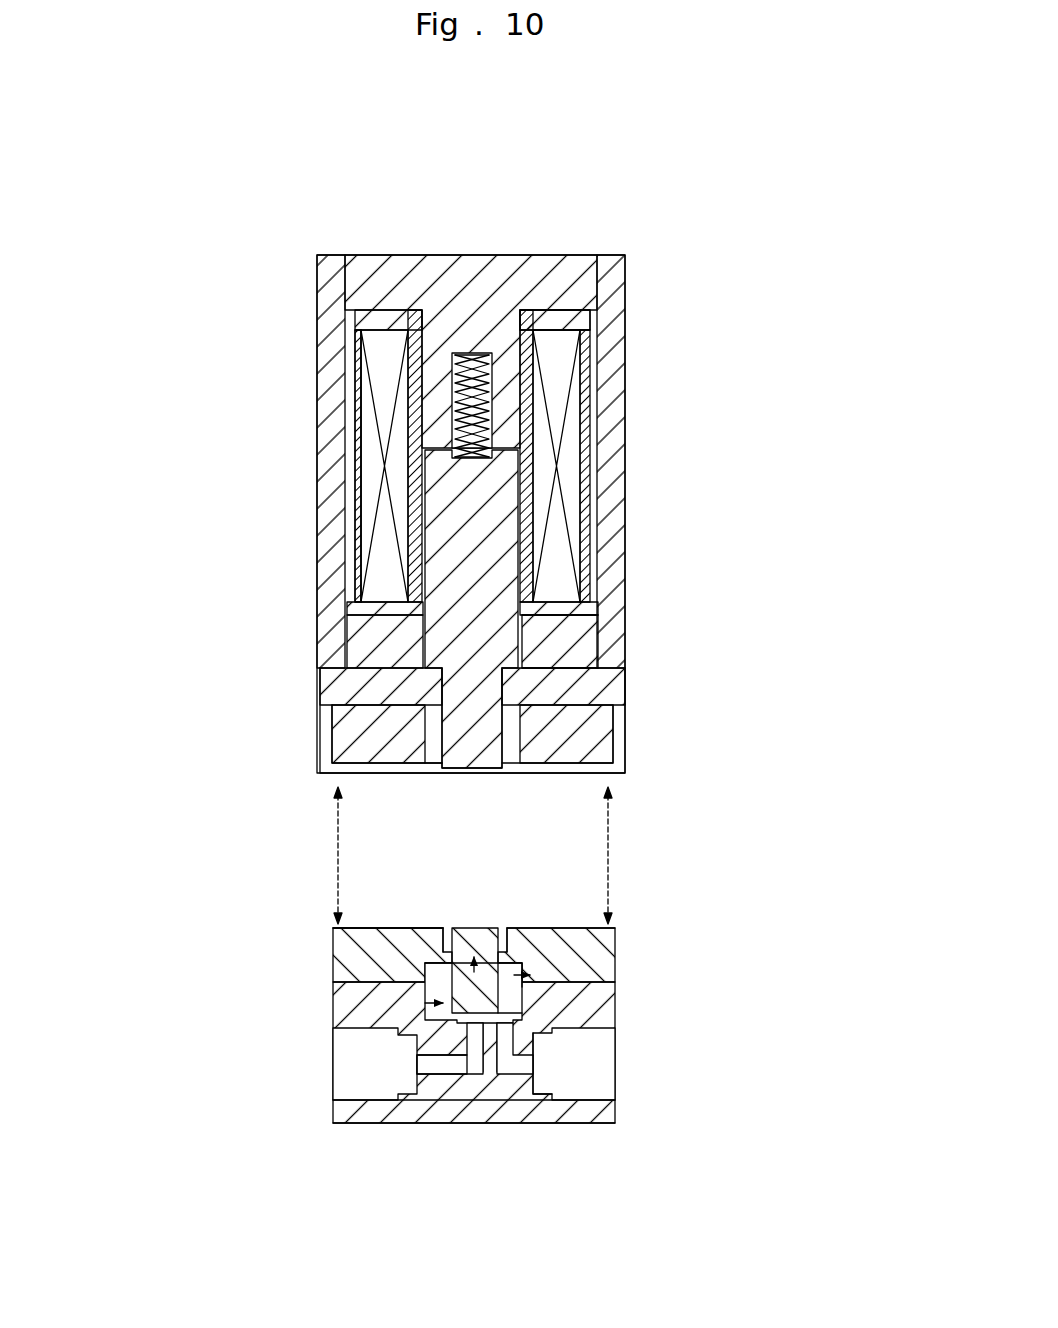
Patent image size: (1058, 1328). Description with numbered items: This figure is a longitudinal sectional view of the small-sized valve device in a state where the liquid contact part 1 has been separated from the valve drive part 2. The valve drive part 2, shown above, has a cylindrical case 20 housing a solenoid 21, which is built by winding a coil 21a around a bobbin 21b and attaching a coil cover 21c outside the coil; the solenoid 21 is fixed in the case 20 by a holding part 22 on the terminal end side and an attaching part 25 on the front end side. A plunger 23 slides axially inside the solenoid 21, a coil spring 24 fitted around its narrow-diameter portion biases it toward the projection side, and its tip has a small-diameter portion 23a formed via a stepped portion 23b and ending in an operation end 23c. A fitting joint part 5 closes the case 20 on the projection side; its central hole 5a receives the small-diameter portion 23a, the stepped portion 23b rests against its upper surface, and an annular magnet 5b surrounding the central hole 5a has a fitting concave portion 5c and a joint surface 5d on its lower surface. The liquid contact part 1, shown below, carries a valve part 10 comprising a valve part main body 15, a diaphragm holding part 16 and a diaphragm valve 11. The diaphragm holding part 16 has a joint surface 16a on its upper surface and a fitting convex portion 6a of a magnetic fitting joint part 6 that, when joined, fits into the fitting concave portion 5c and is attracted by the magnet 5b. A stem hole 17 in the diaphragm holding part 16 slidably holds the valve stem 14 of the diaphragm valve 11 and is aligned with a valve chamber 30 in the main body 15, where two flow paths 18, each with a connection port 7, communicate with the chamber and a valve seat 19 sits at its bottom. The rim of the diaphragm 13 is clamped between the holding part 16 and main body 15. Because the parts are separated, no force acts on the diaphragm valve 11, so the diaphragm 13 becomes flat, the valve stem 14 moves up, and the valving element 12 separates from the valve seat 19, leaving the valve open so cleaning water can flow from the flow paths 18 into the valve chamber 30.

The liquid contact part 1 is at (248, 967).
The valve drive part 2 is at (315, 525).
The fitting joint part 5 is at (630, 755).
The central hole 5a is at (410, 690).
The annular magnet 5b is at (620, 733).
The fitting concave portion 5c is at (342, 753).
The joint surface 5d is at (432, 765).
The fitting joint part 6 is at (326, 975).
The fitting convex portion 6a is at (332, 928).
The connection port 7 is at (357, 1087).
The valve part 10 is at (443, 1003).
The diaphragm valve 11 is at (443, 975).
The valving element 12 is at (470, 1040).
The diaphragm 13 is at (528, 1000).
The valve stem 14 is at (507, 944).
The valve part main body 15 is at (405, 1020).
The diaphragm holding part 16 is at (346, 945).
The joint surface 16a is at (408, 938).
The stem hole 17 is at (500, 938).
The flow path 18 is at (522, 1066).
The valve seat 19 is at (556, 1070).
The case 20 is at (334, 455).
The solenoid 21 is at (585, 400).
The coil 21a is at (566, 443).
The bobbin 21b is at (590, 318).
The coil cover 21c is at (352, 385).
The holding part 22 is at (470, 268).
The plunger 23 is at (500, 565).
The small-diameter portion 23a is at (600, 668).
The stepped portion 23b is at (600, 620).
The operation end 23c is at (497, 695).
The coil spring 24 is at (493, 385).
The attaching part 25 is at (605, 650).
The valve chamber 30 is at (520, 1042).